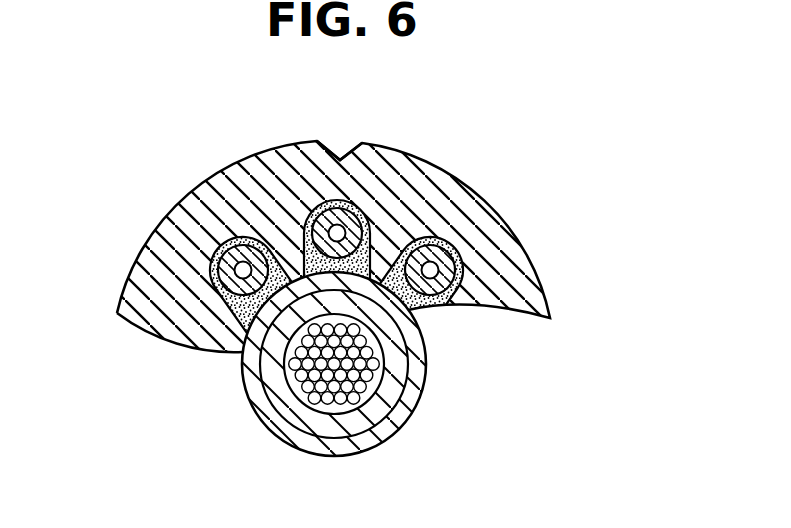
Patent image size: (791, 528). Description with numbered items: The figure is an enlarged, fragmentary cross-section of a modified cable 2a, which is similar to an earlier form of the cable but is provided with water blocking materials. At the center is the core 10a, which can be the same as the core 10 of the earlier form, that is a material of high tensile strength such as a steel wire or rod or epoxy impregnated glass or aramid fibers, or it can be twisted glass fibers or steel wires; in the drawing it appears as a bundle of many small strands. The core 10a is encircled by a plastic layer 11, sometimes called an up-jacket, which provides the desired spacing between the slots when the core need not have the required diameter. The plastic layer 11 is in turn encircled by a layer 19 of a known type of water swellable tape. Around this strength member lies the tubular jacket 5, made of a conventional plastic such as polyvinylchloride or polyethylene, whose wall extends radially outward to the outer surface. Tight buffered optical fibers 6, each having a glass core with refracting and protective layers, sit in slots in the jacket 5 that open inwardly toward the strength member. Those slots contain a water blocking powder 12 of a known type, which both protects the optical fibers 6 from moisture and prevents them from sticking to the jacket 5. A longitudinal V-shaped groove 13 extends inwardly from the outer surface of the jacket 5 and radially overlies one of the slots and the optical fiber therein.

The cable 2a is at (324, 228).
The tubular jacket 5 is at (324, 231).
The tight buffered optical fibers 6 is at (262, 240).
The core 10 is at (310, 380).
The core 10a is at (352, 369).
The plastic layer 11 is at (368, 415).
The water blocking powder 12 is at (368, 243).
The V-shaped groove 13 is at (341, 157).
The layer of water swellable tape 19 is at (272, 415).